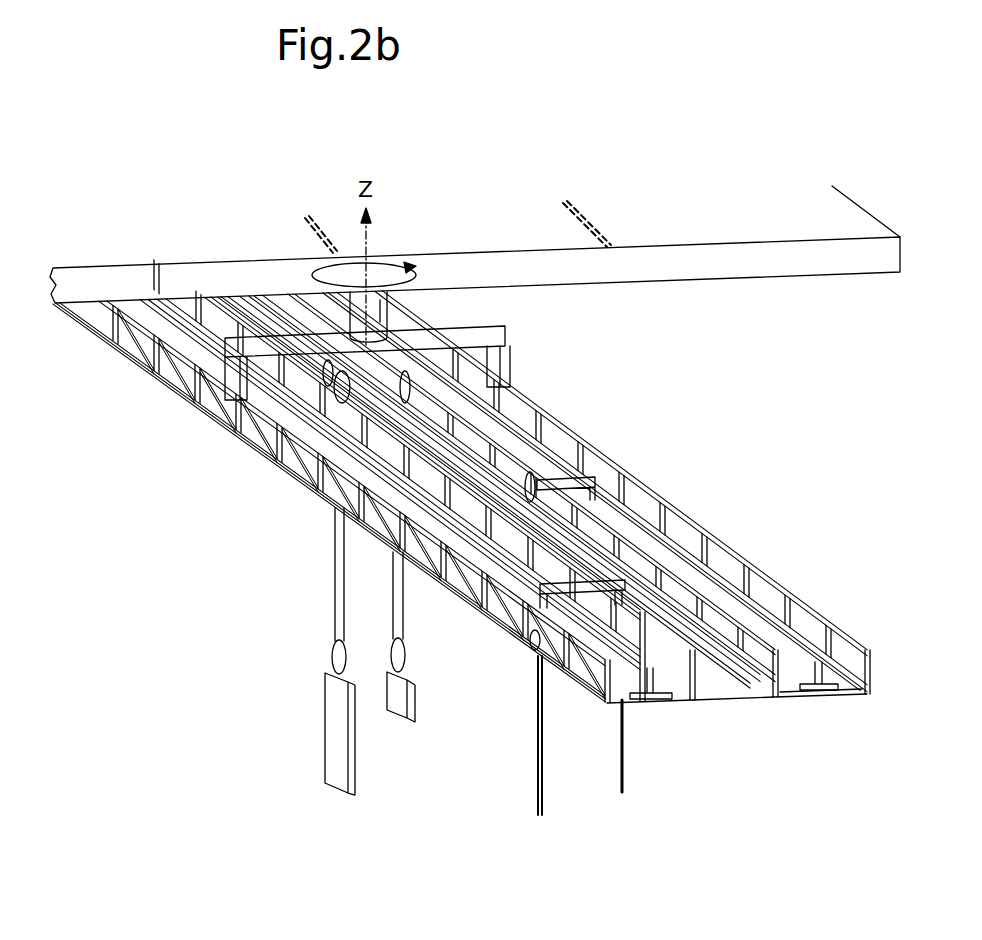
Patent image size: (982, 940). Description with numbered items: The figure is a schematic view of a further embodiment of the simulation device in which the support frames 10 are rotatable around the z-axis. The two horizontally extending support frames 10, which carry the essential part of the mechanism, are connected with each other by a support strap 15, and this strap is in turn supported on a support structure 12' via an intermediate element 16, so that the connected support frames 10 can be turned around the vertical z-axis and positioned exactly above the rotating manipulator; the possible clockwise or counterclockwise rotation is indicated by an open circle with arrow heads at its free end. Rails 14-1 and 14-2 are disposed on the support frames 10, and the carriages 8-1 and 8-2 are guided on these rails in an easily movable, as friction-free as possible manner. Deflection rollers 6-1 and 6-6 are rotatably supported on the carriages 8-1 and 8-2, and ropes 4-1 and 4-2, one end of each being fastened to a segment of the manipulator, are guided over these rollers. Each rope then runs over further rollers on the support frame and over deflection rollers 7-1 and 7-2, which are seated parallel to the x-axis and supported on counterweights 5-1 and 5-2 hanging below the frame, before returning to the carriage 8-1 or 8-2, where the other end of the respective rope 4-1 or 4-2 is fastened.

The support structure 12' is at (475, 244).
The intermediate element 16 is at (389, 306).
The support strap 15 is at (510, 345).
The support frame 10 is at (688, 701).
The rail 14-1 is at (818, 700).
The rail 14-2 is at (652, 700).
The deflection roller 6-1 is at (537, 477).
The deflection roller 6-6 is at (530, 641).
The carriage 8-1 is at (603, 470).
The carriage 8-2 is at (498, 606).
The deflection roller 7-1 is at (391, 650).
The deflection roller 7-2 is at (332, 658).
The counterweight 5-1 is at (408, 708).
The counterweight 5-2 is at (330, 752).
The rope 4-1 is at (537, 772).
The rope 4-2 is at (624, 780).